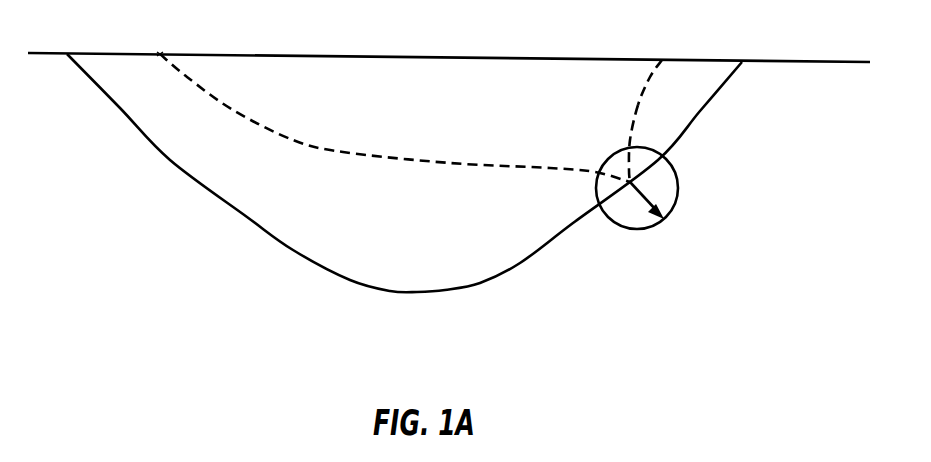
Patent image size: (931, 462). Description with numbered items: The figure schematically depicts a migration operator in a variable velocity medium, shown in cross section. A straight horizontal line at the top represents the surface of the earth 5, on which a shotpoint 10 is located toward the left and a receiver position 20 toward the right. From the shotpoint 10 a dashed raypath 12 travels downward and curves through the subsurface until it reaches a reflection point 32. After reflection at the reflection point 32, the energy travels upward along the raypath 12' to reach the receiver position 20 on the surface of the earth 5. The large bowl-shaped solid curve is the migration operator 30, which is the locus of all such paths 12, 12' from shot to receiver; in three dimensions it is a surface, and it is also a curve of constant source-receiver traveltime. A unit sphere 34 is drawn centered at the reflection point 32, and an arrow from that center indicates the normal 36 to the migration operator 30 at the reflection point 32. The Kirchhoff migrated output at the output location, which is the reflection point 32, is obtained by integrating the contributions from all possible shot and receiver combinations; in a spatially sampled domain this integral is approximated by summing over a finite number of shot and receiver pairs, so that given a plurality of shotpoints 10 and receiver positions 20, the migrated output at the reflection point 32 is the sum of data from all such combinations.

The surface of the earth 5 is at (67, 54).
The shotpoint 10 is at (160, 54).
The raypath 12 is at (395, 118).
The raypath 12' is at (595, 143).
The receiver position 20 is at (662, 60).
The migration operator 30 is at (285, 243).
The reflection point 32 is at (630, 182).
The unit sphere 34 is at (675, 168).
The normal 36 is at (663, 218).